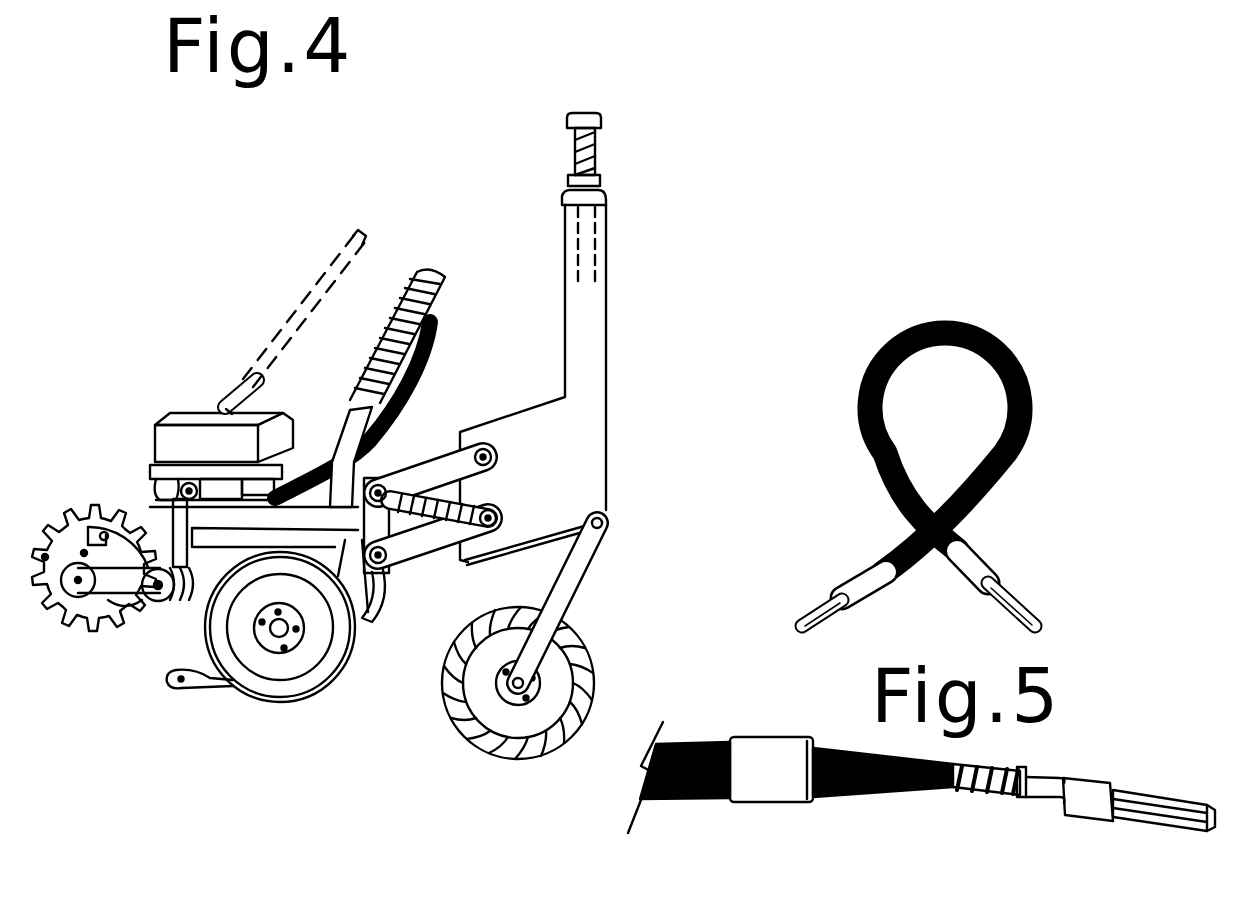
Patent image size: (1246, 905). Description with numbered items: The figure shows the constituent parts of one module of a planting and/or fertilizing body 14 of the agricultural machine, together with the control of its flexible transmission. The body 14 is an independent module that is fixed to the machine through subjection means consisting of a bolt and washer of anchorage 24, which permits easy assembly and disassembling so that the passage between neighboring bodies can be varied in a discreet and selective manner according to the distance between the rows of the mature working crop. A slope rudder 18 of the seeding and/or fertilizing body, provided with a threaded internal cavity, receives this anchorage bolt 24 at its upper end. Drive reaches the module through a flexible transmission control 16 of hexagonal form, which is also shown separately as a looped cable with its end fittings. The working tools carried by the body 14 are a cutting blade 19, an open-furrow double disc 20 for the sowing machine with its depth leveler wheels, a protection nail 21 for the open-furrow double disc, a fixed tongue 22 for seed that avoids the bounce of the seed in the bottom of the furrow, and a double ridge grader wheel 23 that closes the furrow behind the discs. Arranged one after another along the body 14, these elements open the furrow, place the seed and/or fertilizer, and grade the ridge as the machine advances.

In FIG. 4, the planting and/or fertilizing body 14 is at (195, 338).
In FIG. 4, the flexible transmission control with hexagonal form 16 is at (413, 393).
In FIG. 5, the flexible transmission control with hexagonal form 16 is at (1010, 480).
In FIG. 4, the slope rudder of the seeding and/or fertilizing body 18 is at (583, 320).
In FIG. 4, the cutting blade 19 is at (577, 642).
In FIG. 4, the open-furrow double disc 20 is at (303, 683).
In FIG. 4, the protection nail 21 is at (370, 620).
In FIG. 4, the fixed tongue for seed 22 is at (182, 690).
In FIG. 4, the double ridge grader wheel 23 is at (95, 620).
In FIG. 4, the bolt and washer of anchorage 24 is at (592, 152).